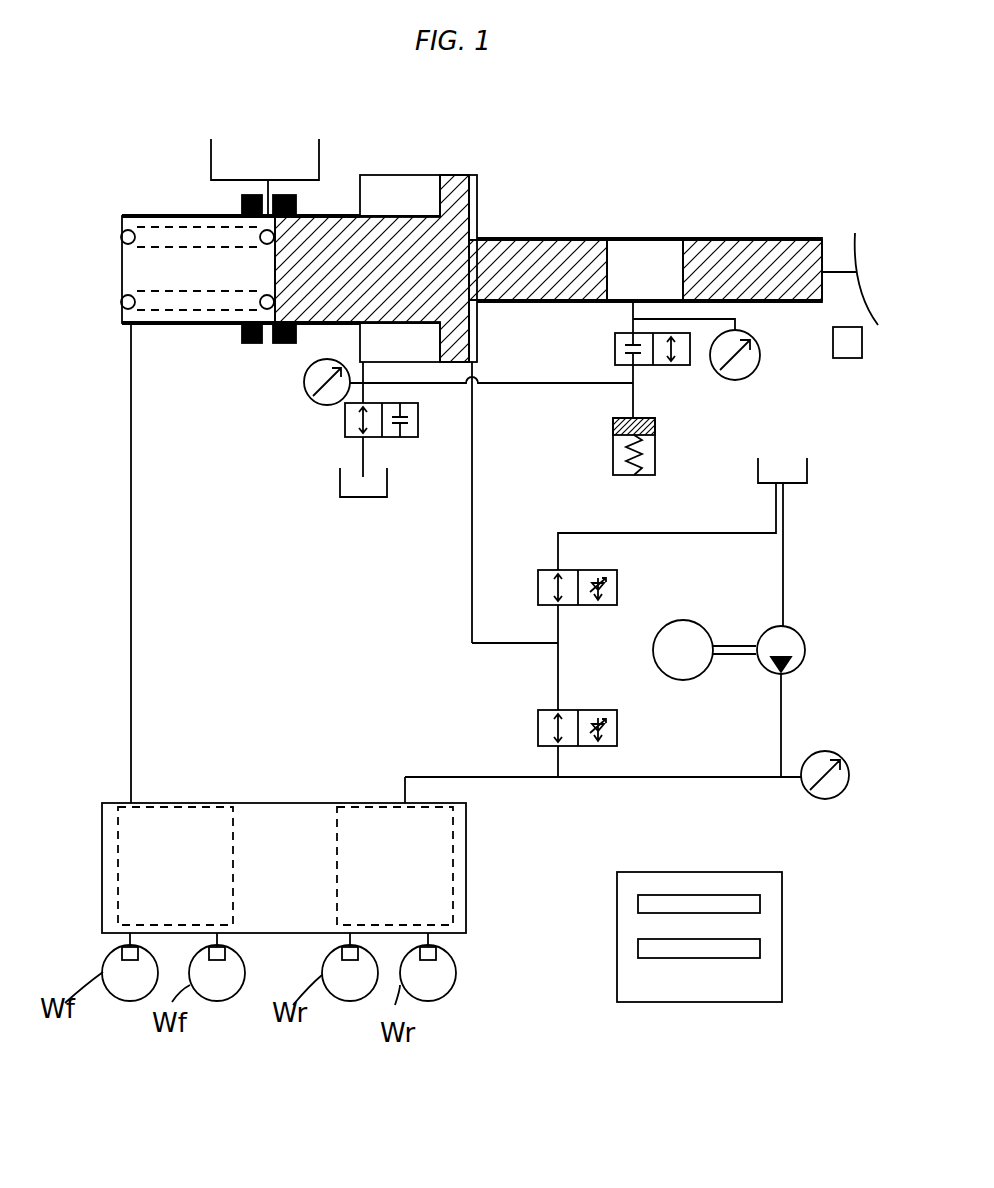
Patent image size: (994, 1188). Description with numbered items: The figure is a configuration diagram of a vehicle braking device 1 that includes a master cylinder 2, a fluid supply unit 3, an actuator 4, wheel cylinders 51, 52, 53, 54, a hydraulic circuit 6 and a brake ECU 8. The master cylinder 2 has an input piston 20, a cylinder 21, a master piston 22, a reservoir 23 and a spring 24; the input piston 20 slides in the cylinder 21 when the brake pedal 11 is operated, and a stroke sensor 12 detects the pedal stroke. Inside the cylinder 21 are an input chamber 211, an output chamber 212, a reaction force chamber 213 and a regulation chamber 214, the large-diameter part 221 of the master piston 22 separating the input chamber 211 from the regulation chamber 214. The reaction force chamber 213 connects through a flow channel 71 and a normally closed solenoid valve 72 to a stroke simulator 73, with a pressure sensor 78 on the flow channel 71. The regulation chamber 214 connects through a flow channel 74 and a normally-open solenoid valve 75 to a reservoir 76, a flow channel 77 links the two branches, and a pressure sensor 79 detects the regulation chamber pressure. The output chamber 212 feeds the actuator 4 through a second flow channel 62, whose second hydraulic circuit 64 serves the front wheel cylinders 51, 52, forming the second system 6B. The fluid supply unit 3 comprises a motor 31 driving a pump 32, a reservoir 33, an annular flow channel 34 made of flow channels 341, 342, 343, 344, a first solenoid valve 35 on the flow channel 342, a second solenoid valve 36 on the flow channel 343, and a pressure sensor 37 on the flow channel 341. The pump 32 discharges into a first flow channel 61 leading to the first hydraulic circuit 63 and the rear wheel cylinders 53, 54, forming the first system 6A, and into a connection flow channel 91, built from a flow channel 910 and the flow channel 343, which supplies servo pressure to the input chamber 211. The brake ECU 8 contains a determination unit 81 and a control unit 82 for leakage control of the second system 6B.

The vehicle braking device 1 is at (90, 140).
The master cylinder 2 is at (103, 208).
The fluid supply unit 3 is at (855, 496).
The actuator 4 is at (102, 840).
The hydraulic circuit 6 is at (100, 692).
The first system 6A is at (388, 727).
The second system 6B is at (108, 448).
The brake ECU 8 is at (617, 915).
The brake pedal 11 is at (866, 305).
The stroke sensor 12 is at (850, 348).
The input piston 20 is at (770, 250).
The cylinder 21 is at (122, 283).
The master piston 22 is at (343, 225).
The reservoir 23 is at (213, 160).
The spring 24 is at (188, 312).
The motor 31 is at (690, 620).
The pump 32 is at (806, 645).
The reservoir 33 is at (808, 475).
The annular flow channel 34 is at (784, 712).
The first solenoid valve 35 is at (538, 583).
The second solenoid valve 36 is at (538, 733).
The pressure sensor 37 is at (850, 776).
The wheel cylinder 51 is at (125, 958).
The wheel cylinder 52 is at (218, 958).
The wheel cylinder 53 is at (342, 958).
The wheel cylinder 54 is at (438, 958).
The first flow channel 61 is at (483, 780).
The second flow channel 62 is at (131, 598).
The first hydraulic circuit 63 is at (365, 803).
The second hydraulic circuit 64 is at (118, 870).
The flow channel 71 is at (636, 395).
The solenoid valve 72 is at (617, 338).
The stroke simulator 73 is at (613, 455).
The flow channel 74 is at (362, 450).
The solenoid valve 75 is at (398, 437).
The reservoir 76 is at (340, 500).
The flow channel 77 is at (497, 385).
The pressure sensor 78 is at (745, 373).
The pressure sensor 79 is at (304, 384).
The determination unit 81 is at (760, 905).
The control unit 82 is at (760, 947).
The connection flow channel 91 is at (472, 545).
The flow channel 910 is at (472, 607).
The input chamber 211 is at (474, 332).
The output chamber 212 is at (137, 266).
The reaction force chamber 213 is at (645, 250).
The regulation chamber 214 is at (386, 192).
The large-diameter part 221 is at (458, 188).
The flow channel 341 is at (660, 780).
The flow channel 342 is at (648, 532).
The flow channel 343 is at (558, 682).
The flow channel 344 is at (784, 565).